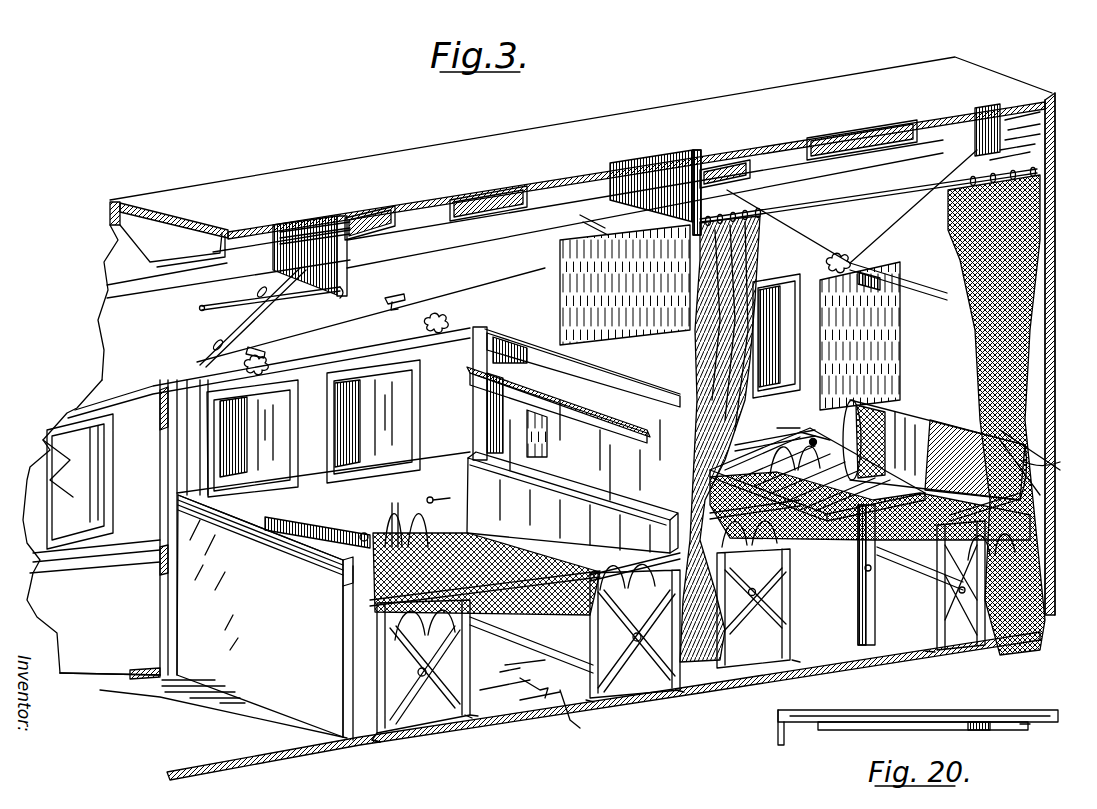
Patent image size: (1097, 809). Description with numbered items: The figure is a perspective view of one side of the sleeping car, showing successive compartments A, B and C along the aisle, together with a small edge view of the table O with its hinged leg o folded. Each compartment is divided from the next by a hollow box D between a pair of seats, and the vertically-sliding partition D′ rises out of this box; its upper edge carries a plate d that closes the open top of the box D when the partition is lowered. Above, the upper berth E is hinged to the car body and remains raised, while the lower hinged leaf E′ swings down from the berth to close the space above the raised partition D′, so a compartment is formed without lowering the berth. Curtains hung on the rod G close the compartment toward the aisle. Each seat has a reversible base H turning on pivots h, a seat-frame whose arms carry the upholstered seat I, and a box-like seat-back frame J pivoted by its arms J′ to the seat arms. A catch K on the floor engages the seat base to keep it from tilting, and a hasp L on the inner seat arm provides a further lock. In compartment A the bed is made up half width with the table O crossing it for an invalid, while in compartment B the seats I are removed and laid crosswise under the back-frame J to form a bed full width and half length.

In FIG. 3, the compartment A is at (830, 700).
In FIG. 3, the compartment B is at (605, 746).
In FIG. 3, the compartment C is at (120, 705).
In FIG. 3, the hollow section or box D is at (282, 663).
In FIG. 3, the vertically-sliding partition D′ is at (338, 582).
In FIG. 3, the plate d is at (252, 535).
In FIG. 3, the upper berth E is at (165, 344).
In FIG. 3, the lower hinged leaf E′ is at (300, 329).
In FIG. 3, the rod G is at (470, 256).
In FIG. 3, the base H is at (442, 750).
In FIG. 3, the pivots h is at (468, 718).
In FIG. 3, the upholstered seat I is at (520, 679).
In FIG. 3, the box-like seat-back frame J is at (1050, 470).
In FIG. 3, the arms of the seat-back frame J′ is at (416, 525).
In FIG. 3, the catch K is at (716, 622).
In FIG. 3, the hasp L is at (435, 498).
In FIG. 3, the table O is at (870, 536).
In FIG. 20, the table O is at (915, 714).
In FIG. 3, the hinged leg o is at (360, 542).
In FIG. 20, the hinged leg o is at (930, 730).
In FIG. 20, the bar end hook c′ is at (777, 742).